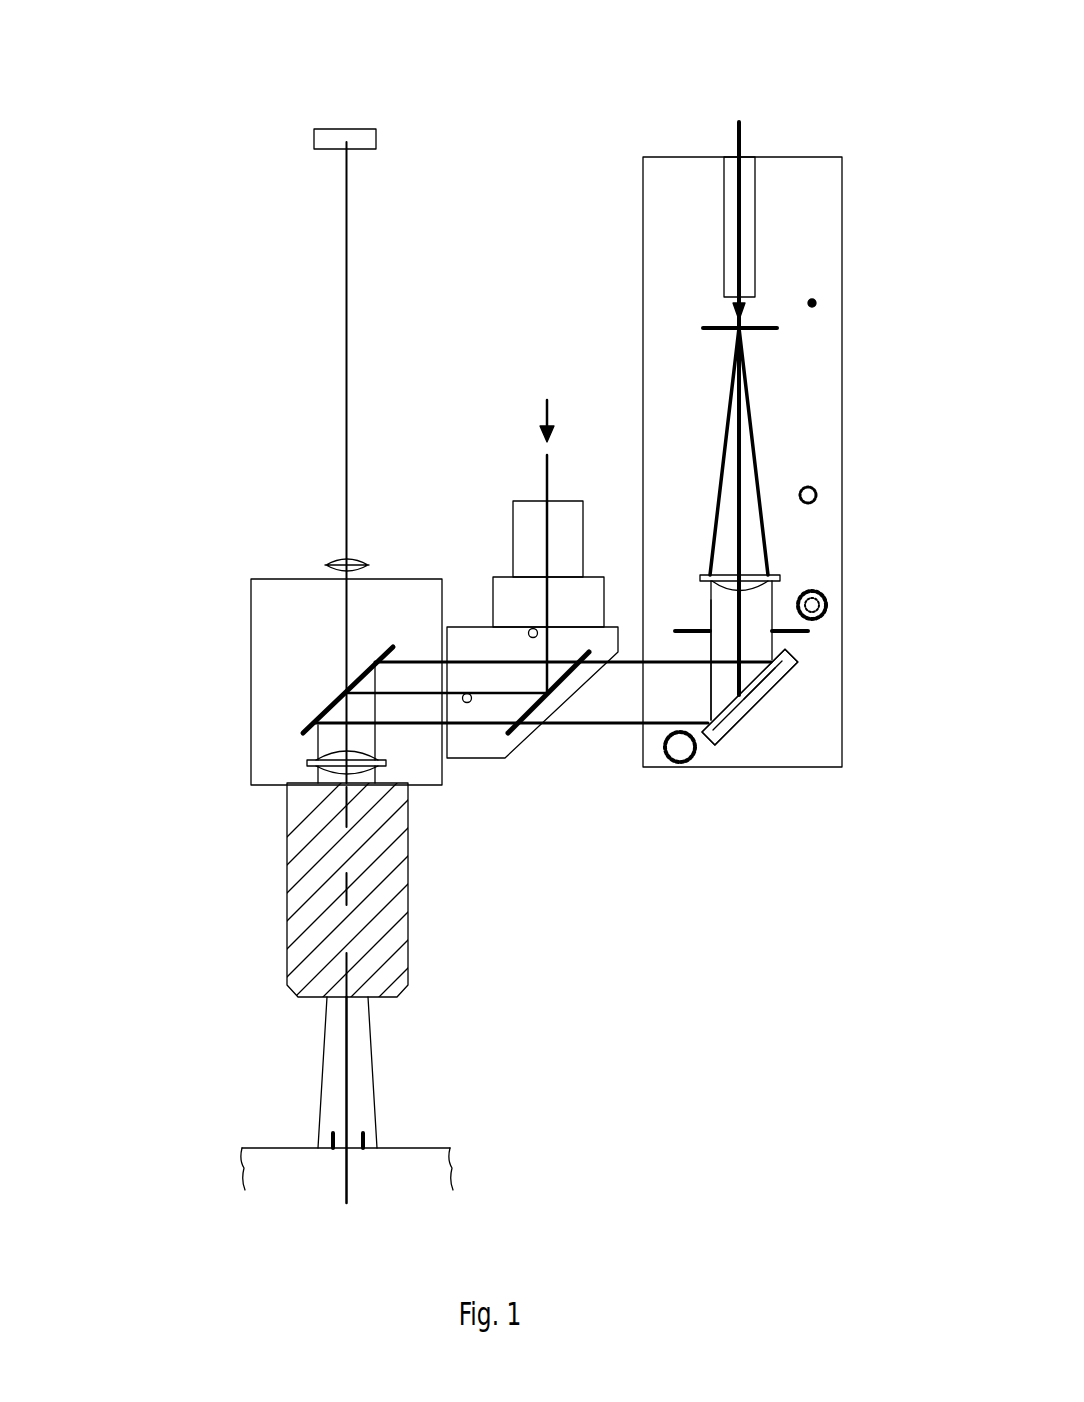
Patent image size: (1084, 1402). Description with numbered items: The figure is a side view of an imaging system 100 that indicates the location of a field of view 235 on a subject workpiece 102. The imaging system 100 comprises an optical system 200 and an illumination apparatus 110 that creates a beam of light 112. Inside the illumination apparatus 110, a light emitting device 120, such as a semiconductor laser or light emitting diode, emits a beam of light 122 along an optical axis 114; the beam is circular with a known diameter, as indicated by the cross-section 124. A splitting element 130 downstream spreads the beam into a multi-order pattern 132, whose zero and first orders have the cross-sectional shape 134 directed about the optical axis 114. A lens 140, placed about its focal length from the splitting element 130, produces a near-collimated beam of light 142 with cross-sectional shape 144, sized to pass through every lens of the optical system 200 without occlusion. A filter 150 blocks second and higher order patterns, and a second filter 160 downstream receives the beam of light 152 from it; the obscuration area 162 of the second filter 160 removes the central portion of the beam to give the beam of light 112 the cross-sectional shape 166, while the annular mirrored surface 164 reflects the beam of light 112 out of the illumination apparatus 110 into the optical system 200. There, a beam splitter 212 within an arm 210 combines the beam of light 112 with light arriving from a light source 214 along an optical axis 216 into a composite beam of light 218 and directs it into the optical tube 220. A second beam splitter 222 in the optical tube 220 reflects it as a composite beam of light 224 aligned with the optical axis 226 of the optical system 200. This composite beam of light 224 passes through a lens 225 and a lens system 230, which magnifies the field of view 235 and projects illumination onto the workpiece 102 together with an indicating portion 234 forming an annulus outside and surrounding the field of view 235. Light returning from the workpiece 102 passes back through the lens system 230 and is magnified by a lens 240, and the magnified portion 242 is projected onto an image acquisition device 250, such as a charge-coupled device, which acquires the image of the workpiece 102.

The imaging system 100 is at (547, 82).
The workpiece 102 is at (282, 1158).
The illumination apparatus 110 is at (643, 223).
The beam of light 112 is at (595, 723).
The optical axis 114 is at (742, 137).
The light emitting device 120 is at (755, 222).
The beam of light 122 is at (735, 316).
The cross-section 124 is at (816, 303).
The splitting element 130 is at (765, 330).
The multi-order pattern 132 is at (760, 438).
The cross-sectional shape 134 is at (818, 493).
The lens 140 is at (780, 580).
The beam of light 142 is at (720, 605).
The cross-sectional shape 144 is at (828, 605).
The filter 150 is at (808, 631).
The beam of light 152 is at (717, 645).
The second filter 160 is at (762, 734).
The obscuration area 162 is at (770, 705).
The mirrored surface 164 is at (788, 655).
The cross-sectional shape 166 is at (688, 760).
The optical system 200 is at (228, 975).
The arm 210 is at (584, 523).
The beam splitter 212 is at (535, 710).
The light source 214 is at (547, 400).
The optical axis 216 is at (547, 475).
The composite beam of light 218 is at (422, 707).
The optical tube 220 is at (251, 628).
The second beam splitter 222 is at (380, 645).
The composite beam of light 224 is at (313, 745).
The lens 225 is at (307, 762).
The optical axis 226 is at (343, 803).
The lens system 230 is at (408, 950).
The indicating portion 234 is at (373, 1088).
The field of view 235 is at (363, 1133).
The lens 240 is at (330, 562).
The magnified portion 242 is at (346, 295).
The image acquisition device 250 is at (353, 129).